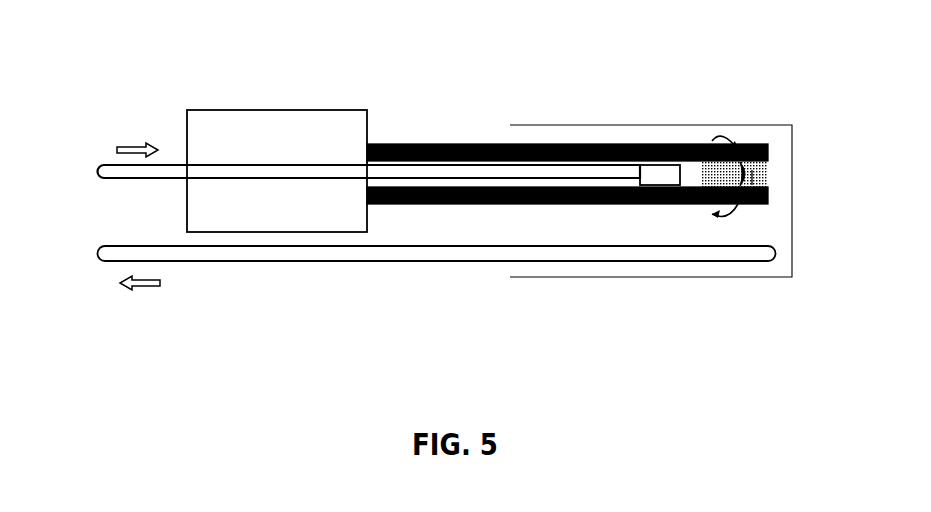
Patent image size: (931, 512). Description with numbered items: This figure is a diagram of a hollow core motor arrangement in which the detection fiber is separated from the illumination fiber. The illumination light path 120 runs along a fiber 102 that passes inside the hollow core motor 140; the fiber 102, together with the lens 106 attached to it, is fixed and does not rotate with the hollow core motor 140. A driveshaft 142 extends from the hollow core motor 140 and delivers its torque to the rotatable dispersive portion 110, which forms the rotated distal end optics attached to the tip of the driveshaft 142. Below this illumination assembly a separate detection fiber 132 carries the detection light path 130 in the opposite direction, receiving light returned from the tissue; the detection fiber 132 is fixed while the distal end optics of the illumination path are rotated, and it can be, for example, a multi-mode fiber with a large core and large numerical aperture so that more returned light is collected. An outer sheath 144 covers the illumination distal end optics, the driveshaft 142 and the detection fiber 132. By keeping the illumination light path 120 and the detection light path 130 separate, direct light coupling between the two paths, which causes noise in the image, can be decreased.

The fiber 102 is at (628, 172).
The lens 106 is at (662, 175).
The rotatable dispersive portion 110 is at (750, 200).
The illumination light path 120 is at (137, 126).
The detection light path 130 is at (139, 307).
The detection fiber 132 is at (423, 262).
The hollow core motor 140 is at (227, 108).
The driveshaft 142 is at (570, 145).
The outer sheath 144 is at (777, 125).